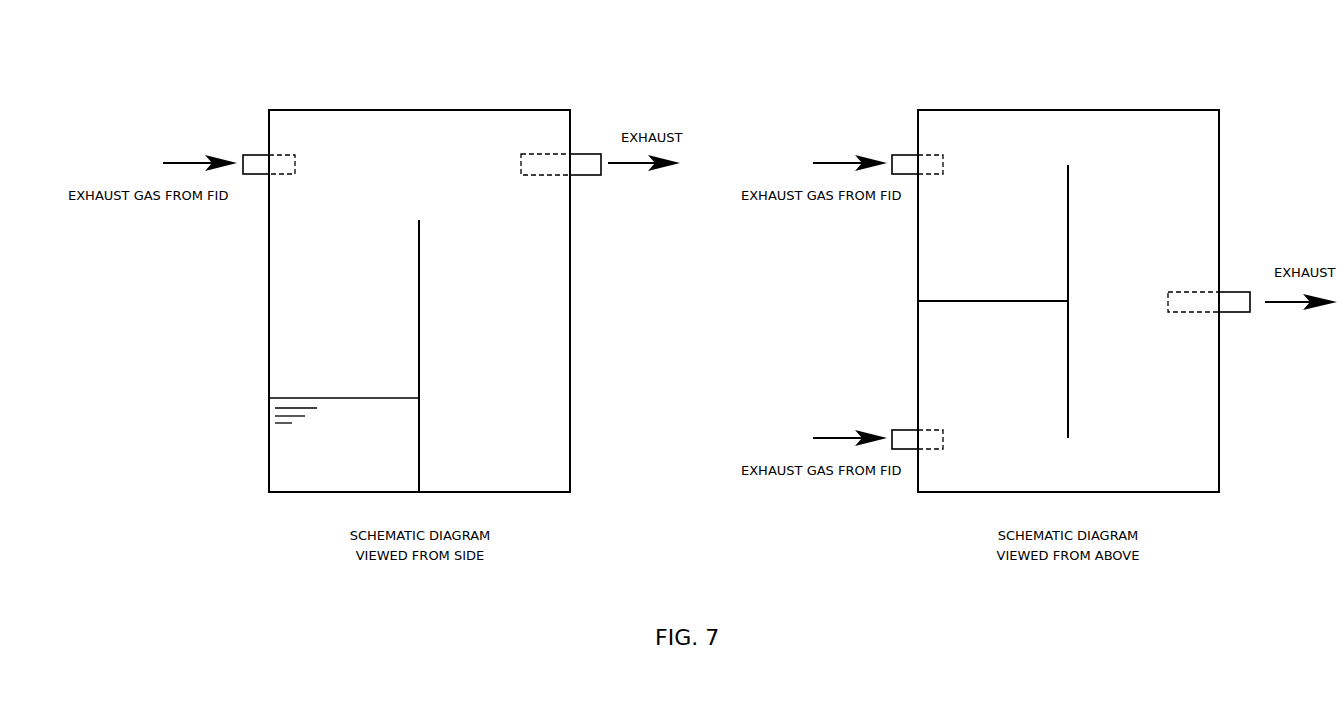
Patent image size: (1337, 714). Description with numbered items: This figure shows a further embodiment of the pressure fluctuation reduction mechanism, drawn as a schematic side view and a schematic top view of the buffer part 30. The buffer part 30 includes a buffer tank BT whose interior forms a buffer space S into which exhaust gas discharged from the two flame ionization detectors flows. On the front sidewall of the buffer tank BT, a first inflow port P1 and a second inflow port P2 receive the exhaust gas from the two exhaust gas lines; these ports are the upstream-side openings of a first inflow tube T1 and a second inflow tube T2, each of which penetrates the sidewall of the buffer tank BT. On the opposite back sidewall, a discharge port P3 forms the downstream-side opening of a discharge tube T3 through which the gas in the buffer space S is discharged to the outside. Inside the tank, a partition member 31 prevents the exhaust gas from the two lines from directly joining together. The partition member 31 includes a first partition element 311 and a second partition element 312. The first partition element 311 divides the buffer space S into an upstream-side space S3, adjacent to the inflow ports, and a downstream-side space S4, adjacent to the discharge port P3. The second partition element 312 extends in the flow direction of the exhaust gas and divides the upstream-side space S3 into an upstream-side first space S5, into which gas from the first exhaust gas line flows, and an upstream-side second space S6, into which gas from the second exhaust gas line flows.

The buffer part 30 is at (222, 81).
The partition member 31 is at (1104, 434).
The first partition element 311 is at (419, 283).
The second partition element 312 is at (983, 299).
The buffer tank BT is at (570, 310).
The first inflow port P1 is at (241, 160).
The second inflow port P2 is at (890, 435).
The discharge port P3 is at (602, 170).
The first inflow tube T1 is at (289, 178).
The second inflow tube T2 is at (930, 428).
The discharge tube T3 is at (538, 177).
The buffer space S is at (518, 127).
The upstream-side space S3 is at (918, 348).
The downstream-side space S4 is at (822, 144).
The upstream-side first space S5 is at (938, 273).
The upstream-side second space S6 is at (938, 332).